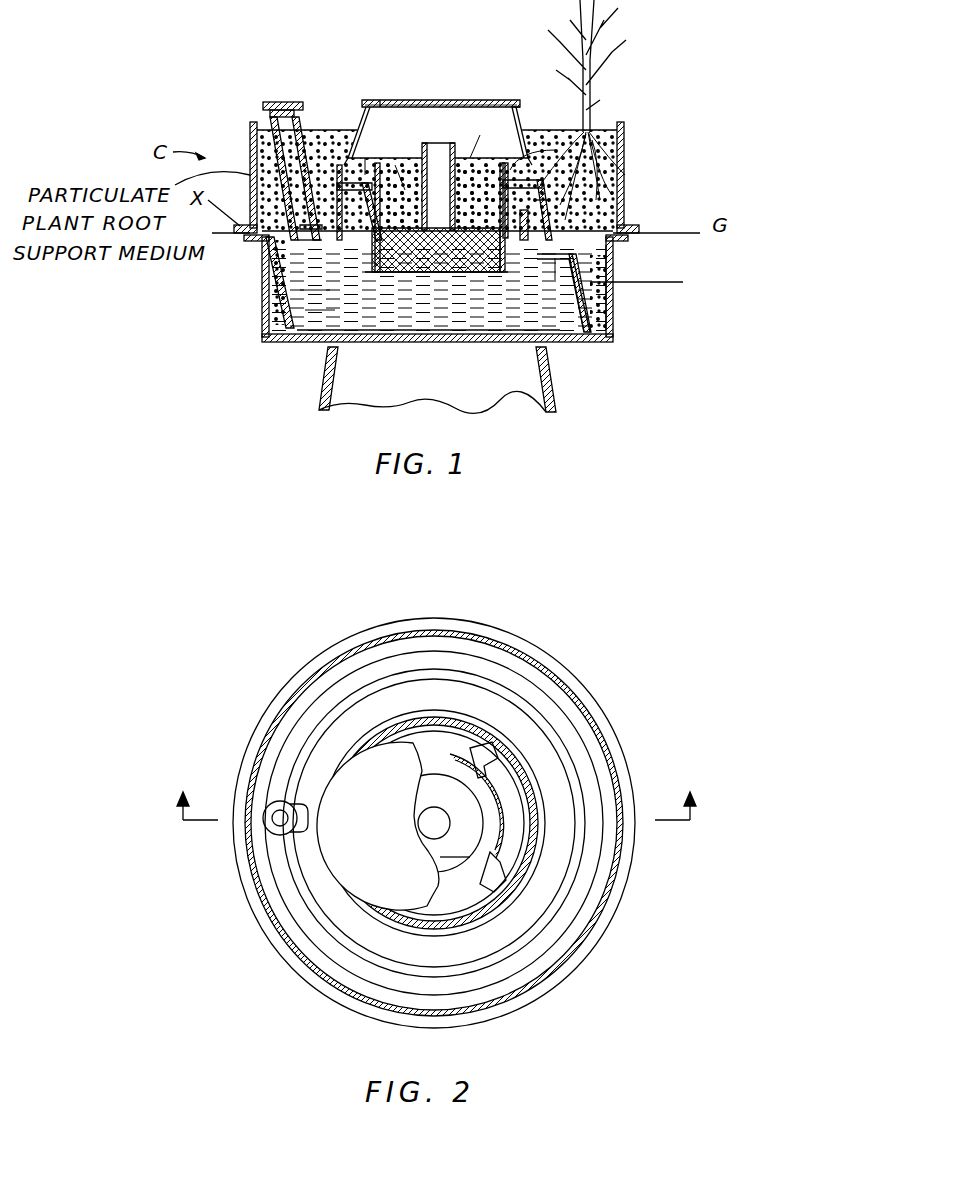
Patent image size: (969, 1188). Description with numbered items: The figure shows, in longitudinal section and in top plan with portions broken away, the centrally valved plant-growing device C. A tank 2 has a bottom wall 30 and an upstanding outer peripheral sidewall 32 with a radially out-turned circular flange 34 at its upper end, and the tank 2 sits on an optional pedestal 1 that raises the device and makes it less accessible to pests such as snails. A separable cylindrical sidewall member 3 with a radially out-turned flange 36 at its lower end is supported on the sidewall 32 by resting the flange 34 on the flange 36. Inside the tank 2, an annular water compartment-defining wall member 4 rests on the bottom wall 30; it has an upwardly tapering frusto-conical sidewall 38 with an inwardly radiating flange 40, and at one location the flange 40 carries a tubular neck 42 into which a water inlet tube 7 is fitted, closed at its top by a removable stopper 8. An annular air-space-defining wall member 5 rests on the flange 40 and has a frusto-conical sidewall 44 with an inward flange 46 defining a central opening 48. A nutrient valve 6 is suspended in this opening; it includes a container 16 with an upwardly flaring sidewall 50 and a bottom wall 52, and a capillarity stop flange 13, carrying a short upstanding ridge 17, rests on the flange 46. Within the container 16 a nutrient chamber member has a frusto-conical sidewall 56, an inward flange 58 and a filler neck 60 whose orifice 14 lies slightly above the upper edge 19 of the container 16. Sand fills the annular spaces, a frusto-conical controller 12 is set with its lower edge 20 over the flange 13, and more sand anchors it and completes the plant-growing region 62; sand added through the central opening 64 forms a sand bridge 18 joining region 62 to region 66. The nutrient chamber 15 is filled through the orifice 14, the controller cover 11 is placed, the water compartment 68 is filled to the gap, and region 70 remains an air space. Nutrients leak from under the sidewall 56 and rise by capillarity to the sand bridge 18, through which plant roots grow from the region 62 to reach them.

In FIG. 1, the pedestal 1 is at (551, 388).
In FIG. 2, the pedestal 1 is at (437, 790).
In FIG. 1, the tank 2 is at (613, 300).
In FIG. 2, the tank 2 is at (586, 738).
In FIG. 1, the sidewall member 3 is at (626, 168).
In FIG. 2, the sidewall member 3 is at (496, 637).
In FIG. 1, the water compartment-defining wall member 4 is at (592, 266).
In FIG. 2, the water compartment-defining wall member 4 is at (521, 703).
In FIG. 1, the air-space-defining wall member 5 is at (548, 208).
In FIG. 2, the air-space-defining wall member 5 is at (525, 806).
In FIG. 1, the nutrient valve 6 is at (492, 100).
In FIG. 2, the nutrient valve 6 is at (479, 786).
In FIG. 1, the water inlet tube 7 is at (304, 121).
In FIG. 2, the water inlet tube 7 is at (266, 824).
In FIG. 1, the stopper 8 is at (272, 100).
In FIG. 1, the controller cover 11 is at (412, 100).
In FIG. 2, the controller cover 11 is at (373, 852).
In FIG. 1, the controller 12 is at (524, 134).
In FIG. 2, the controller 12 is at (498, 890).
In FIG. 1, the capillarity stop flange 13 is at (512, 180).
In FIG. 2, the capillarity stop flange 13 is at (513, 782).
In FIG. 1, the orifice 14 is at (468, 158).
In FIG. 2, the orifice 14 is at (443, 820).
In FIG. 1, the nutrient chamber 15 is at (438, 215).
In FIG. 2, the nutrient chamber 15 is at (455, 846).
In FIG. 1, the container 16 is at (510, 200).
In FIG. 1, the ridge 17 is at (608, 157).
In FIG. 2, the ridge 17 is at (492, 742).
In FIG. 1, the sand bridge 18 is at (392, 162).
In FIG. 1, the upper edge 19 is at (368, 165).
In FIG. 1, the lower edge 20 is at (503, 178).
In FIG. 1, the bottom wall 30 is at (610, 341).
In FIG. 1, the outer peripheral sidewall 32 is at (598, 322).
In FIG. 1, the flange 34 is at (626, 240).
In FIG. 1, the flange 36 is at (641, 227).
In FIG. 1, the sidewall 38 is at (652, 277).
In FIG. 1, the flange 40 is at (560, 262).
In FIG. 1, the tubular neck 42 is at (262, 255).
In FIG. 1, the sidewall 44 is at (378, 200).
In FIG. 1, the flange 46 is at (540, 203).
In FIG. 1, the central opening 48 is at (385, 176).
In FIG. 1, the sidewall 50 is at (372, 262).
In FIG. 1, the bottom wall 52 is at (387, 273).
In FIG. 1, the sidewall 56 is at (478, 228).
In FIG. 1, the flange 58 is at (325, 226).
In FIG. 1, the filler neck 60 is at (424, 142).
In FIG. 1, the region 62 is at (505, 188).
In FIG. 1, the central opening 64 is at (495, 112).
In FIG. 1, the region 66 is at (383, 130).
In FIG. 1, the water compartment 68 is at (433, 318).
In FIG. 1, the region 70 is at (507, 230).